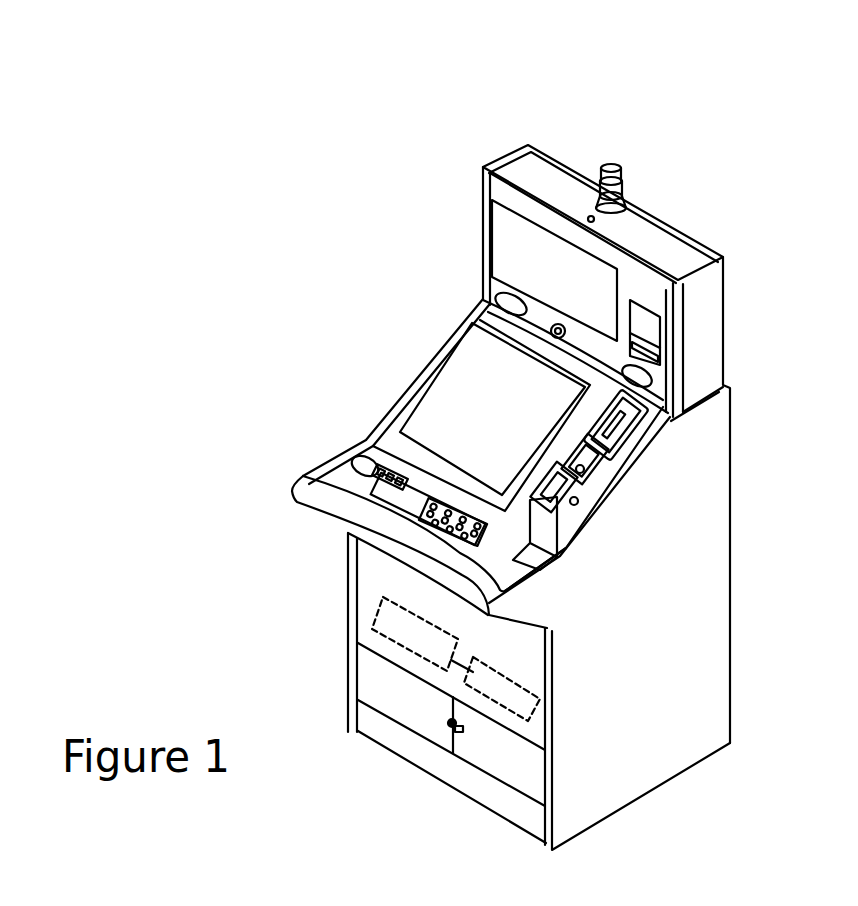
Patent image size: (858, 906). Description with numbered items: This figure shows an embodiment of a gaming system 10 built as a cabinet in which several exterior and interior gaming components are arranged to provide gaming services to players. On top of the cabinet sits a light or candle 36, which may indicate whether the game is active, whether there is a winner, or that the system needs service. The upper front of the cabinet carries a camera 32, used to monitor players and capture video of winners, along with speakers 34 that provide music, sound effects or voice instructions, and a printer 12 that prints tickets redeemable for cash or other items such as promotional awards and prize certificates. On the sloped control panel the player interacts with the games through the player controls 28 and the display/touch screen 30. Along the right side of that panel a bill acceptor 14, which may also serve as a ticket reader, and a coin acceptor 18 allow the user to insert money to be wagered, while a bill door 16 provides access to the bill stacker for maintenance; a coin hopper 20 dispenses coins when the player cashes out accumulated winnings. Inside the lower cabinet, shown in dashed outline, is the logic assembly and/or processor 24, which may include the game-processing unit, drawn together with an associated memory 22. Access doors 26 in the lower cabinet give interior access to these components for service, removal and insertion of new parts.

The gaming system 10 is at (430, 88).
The printer 12 is at (663, 328).
The bill acceptor 14 is at (637, 435).
The bill door 16 is at (627, 468).
The coin acceptor 18 is at (587, 503).
The coin hopper 20 is at (565, 558).
The memory 22 is at (538, 692).
The processor 24 is at (377, 632).
The access doors 26 is at (447, 722).
The player controls 28 is at (355, 478).
The display/touch screen 30 is at (433, 406).
The camera 32 is at (548, 332).
The speakers 34 is at (485, 298).
The light or candle 36 is at (632, 181).